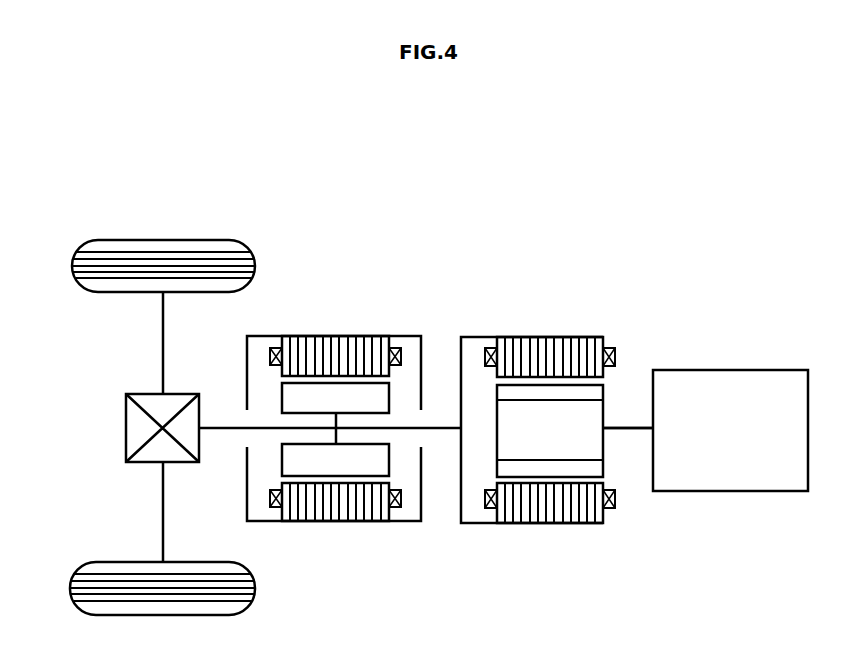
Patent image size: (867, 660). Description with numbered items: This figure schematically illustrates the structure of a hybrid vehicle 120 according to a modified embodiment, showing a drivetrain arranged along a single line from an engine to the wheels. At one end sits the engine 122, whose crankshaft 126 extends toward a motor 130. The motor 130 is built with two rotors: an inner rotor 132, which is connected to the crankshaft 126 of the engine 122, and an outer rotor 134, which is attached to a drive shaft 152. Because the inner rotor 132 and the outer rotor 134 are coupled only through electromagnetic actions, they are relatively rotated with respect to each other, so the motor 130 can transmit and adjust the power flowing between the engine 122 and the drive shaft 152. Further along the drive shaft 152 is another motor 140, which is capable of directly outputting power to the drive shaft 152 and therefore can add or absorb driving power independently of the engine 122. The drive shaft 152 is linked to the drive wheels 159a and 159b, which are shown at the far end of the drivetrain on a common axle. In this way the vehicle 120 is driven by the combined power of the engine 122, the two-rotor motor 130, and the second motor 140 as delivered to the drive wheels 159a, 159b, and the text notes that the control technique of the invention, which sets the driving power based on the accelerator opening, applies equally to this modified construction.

The hybrid vehicle 120 is at (678, 213).
The engine 122 is at (731, 370).
The crankshaft 126 is at (622, 429).
The motor 130 is at (554, 361).
The inner rotor 132 is at (609, 417).
The outer rotor 134 is at (513, 336).
The motor 140 is at (337, 336).
The drive shaft 152 is at (434, 430).
The drive wheel 159a is at (112, 293).
The drive wheel 159b is at (117, 562).